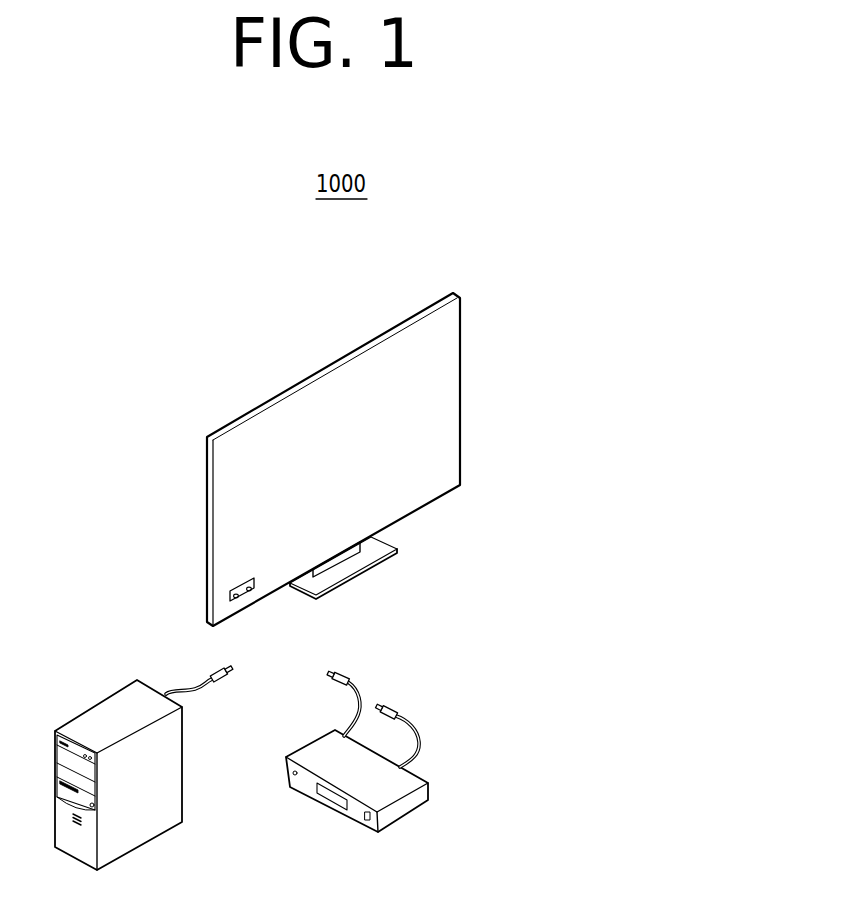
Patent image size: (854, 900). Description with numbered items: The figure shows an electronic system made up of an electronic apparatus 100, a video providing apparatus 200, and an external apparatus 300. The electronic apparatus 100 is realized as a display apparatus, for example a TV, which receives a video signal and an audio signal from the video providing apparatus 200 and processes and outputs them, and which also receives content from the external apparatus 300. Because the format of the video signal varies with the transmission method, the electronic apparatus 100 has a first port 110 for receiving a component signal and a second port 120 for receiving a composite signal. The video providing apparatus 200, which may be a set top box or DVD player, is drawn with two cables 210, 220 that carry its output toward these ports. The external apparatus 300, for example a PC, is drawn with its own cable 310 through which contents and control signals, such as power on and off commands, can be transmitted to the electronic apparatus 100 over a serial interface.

The electronic apparatus 100 is at (410, 318).
The first port 110 is at (228, 597).
The second port 120 is at (256, 588).
The video providing apparatus 200 is at (299, 752).
The first cable 210 is at (352, 683).
The second cable 220 is at (420, 733).
The external apparatus 300 is at (94, 712).
The computer cable 310 is at (169, 690).